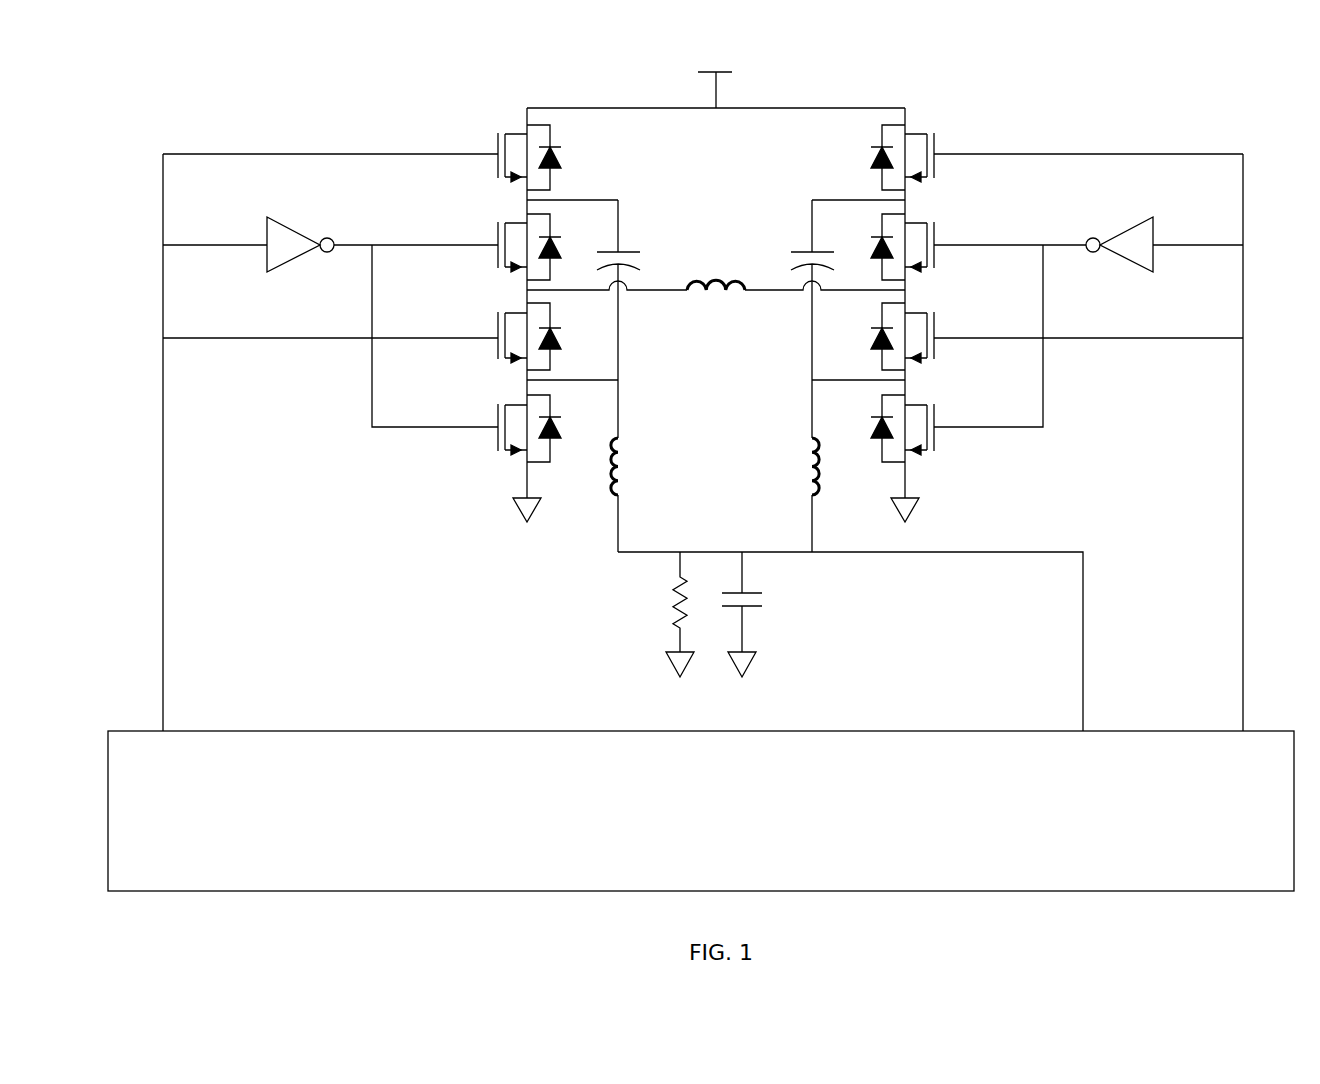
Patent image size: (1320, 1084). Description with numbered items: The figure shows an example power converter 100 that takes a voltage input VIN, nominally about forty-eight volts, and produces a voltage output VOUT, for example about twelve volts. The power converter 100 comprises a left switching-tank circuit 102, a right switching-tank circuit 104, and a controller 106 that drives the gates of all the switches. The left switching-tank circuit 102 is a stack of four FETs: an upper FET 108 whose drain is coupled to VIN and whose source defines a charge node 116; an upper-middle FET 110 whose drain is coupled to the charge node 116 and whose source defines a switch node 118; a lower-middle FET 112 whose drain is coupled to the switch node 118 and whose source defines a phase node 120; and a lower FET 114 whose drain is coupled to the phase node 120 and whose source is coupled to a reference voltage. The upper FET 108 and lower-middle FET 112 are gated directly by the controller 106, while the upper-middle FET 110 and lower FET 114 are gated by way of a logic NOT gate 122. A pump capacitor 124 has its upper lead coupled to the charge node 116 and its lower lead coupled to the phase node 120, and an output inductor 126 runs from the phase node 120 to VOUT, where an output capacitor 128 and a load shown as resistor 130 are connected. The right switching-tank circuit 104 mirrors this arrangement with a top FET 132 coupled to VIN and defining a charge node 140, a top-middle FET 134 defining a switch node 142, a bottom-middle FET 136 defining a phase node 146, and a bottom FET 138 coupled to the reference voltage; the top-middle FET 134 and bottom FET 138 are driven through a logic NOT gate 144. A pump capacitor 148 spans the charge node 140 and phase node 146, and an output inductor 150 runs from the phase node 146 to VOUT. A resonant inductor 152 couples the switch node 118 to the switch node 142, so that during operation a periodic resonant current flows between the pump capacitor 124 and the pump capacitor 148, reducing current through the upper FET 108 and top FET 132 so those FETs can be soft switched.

The power converter 100 is at (701, 467).
The left switching-tank circuit 102 is at (425, 335).
The right switching-tank circuit 104 is at (994, 315).
The controller 106 is at (698, 803).
The upper FET 108 is at (490, 138).
The upper-middle FET 110 is at (490, 232).
The lower-middle FET 112 is at (490, 348).
The lower FET 114 is at (490, 443).
The charge node 116 is at (515, 203).
The switch node 118 is at (518, 290).
The phase node 120 is at (513, 385).
The logic NOT gate 122 is at (288, 222).
The pump capacitor 124 is at (632, 242).
The output inductor 126 is at (625, 470).
The output capacitor 128 is at (770, 595).
The resistor 130 is at (665, 590).
The top FET 132 is at (945, 142).
The top-middle FET 134 is at (945, 235).
The bottom-middle FET 136 is at (943, 325).
The bottom FET 138 is at (945, 415).
The charge node 140 is at (912, 203).
The switch node 142 is at (912, 295).
The logic NOT gate 144 is at (1125, 232).
The phase node 146 is at (912, 380).
The pump capacitor 148 is at (803, 240).
The output inductor 150 is at (803, 470).
The resonant inductor 152 is at (705, 268).